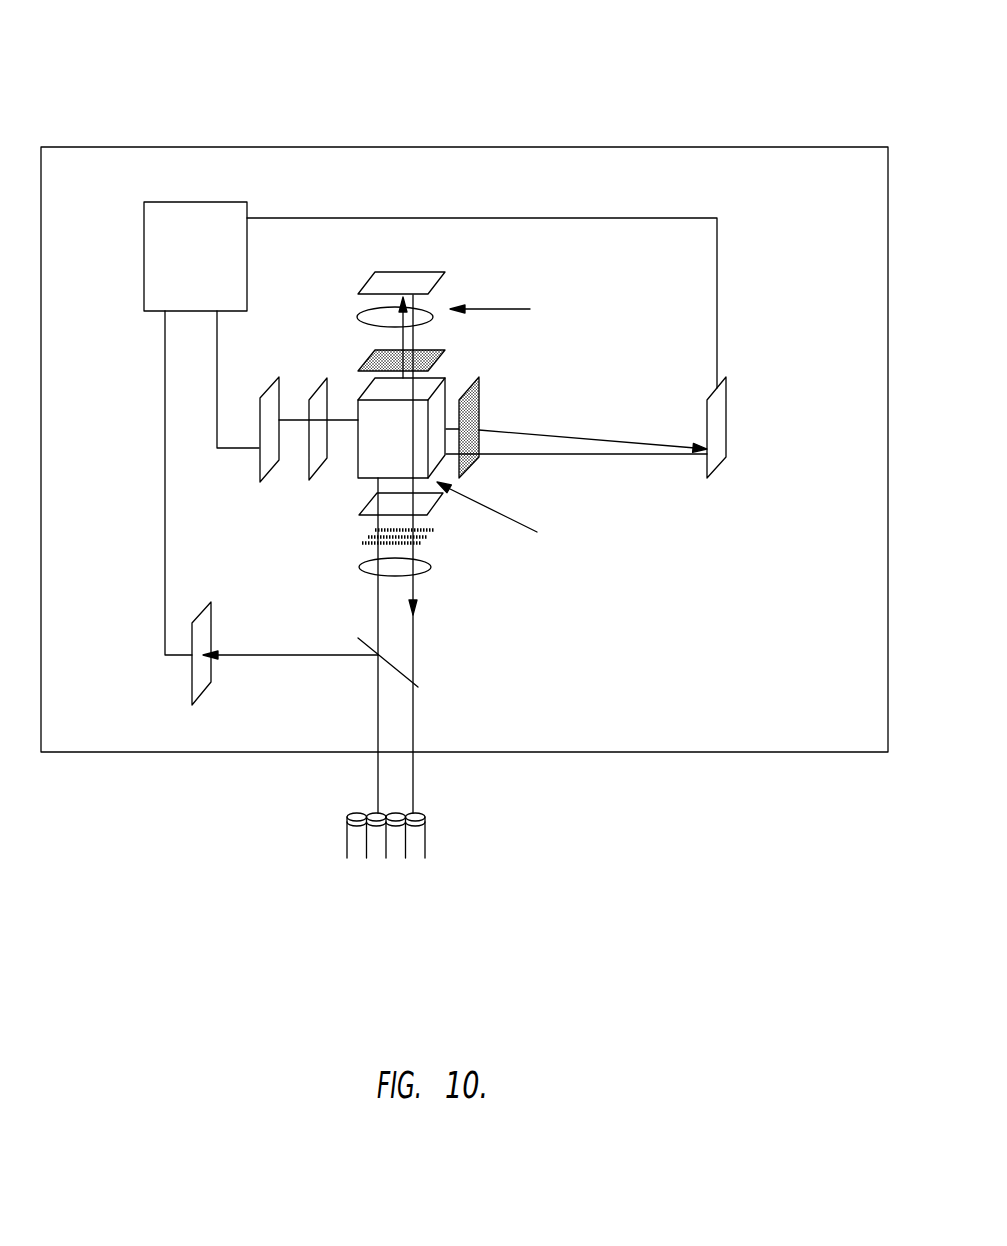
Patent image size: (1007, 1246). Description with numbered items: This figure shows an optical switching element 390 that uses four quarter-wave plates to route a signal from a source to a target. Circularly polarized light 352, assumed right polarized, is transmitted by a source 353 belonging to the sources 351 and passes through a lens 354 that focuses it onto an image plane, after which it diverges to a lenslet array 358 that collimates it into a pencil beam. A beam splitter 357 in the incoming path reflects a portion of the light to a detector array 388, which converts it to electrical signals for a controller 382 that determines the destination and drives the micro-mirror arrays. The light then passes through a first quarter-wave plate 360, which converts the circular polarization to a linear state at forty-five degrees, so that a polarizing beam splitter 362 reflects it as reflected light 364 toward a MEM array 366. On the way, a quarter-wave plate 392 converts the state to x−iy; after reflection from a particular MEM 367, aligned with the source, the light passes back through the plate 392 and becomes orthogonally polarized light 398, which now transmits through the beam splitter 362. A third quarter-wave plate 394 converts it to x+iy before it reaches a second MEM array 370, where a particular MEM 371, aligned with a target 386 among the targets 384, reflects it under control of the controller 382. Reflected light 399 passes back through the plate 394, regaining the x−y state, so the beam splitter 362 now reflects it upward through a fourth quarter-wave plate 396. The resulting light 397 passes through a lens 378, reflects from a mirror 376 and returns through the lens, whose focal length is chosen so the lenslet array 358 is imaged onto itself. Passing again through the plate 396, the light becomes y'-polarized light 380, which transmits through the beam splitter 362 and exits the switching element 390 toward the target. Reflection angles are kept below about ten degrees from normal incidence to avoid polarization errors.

The switching element 390 is at (800, 118).
The controller 382 is at (215, 268).
The mirror 376 is at (441, 272).
The light 397 is at (400, 343).
The lens 378 is at (509, 309).
The fourth λ/4 plate 396 is at (441, 352).
The MEM 367 is at (259, 407).
The MEM array 366 is at (259, 468).
The λ/4 plate 392 is at (308, 468).
The reflected light 364 is at (350, 413).
The polarizing beam splitter 362 is at (461, 422).
The third λ/4 plate 394 is at (480, 396).
The light 398 is at (548, 432).
The reflected light 399 is at (556, 458).
The MEM array 370 is at (728, 443).
The MEM 371 is at (705, 462).
The λ/4 plate 360 is at (378, 508).
The lenslet array 358 is at (374, 533).
The light 380 is at (414, 551).
The lens 354 is at (360, 569).
The detector array 388 is at (210, 603).
The circularly polarized light 352 is at (378, 632).
The beam splitter 357 is at (416, 683).
The sources 351 is at (314, 837).
The targets 384 is at (441, 834).
The source 353 is at (377, 813).
The target 386 is at (413, 813).